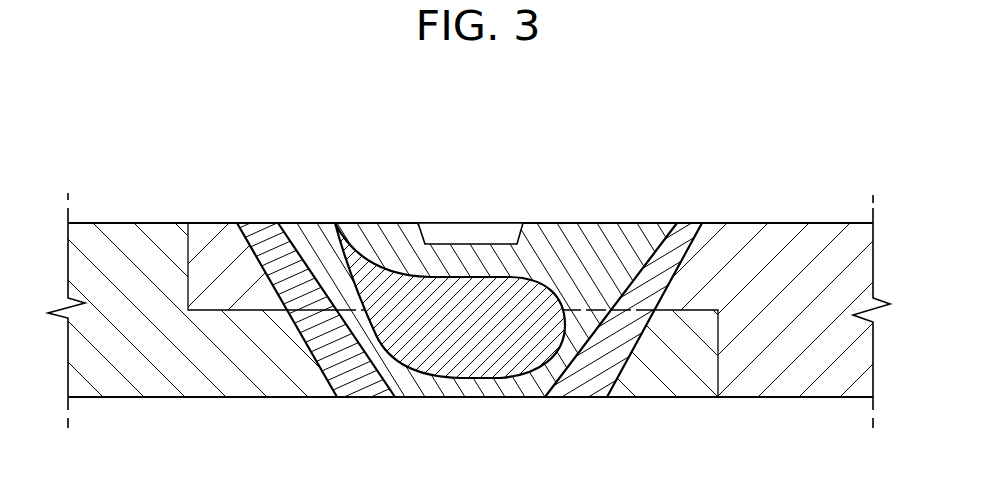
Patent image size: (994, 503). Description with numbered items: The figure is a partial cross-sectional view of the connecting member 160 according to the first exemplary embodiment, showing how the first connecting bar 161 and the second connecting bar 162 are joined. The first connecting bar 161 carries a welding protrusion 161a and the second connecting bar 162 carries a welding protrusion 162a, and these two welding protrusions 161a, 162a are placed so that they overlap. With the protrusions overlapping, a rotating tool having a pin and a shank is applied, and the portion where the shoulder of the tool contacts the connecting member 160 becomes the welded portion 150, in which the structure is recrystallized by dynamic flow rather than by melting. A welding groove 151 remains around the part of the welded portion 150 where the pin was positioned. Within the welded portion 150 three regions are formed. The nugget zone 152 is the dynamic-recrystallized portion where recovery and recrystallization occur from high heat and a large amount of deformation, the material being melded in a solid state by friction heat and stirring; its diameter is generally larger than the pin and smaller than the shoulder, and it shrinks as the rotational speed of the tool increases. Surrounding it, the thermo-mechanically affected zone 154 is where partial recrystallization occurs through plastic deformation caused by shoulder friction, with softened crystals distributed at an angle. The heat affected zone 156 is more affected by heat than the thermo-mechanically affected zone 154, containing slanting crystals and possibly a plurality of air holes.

The welded portion 150 is at (648, 225).
The welding groove 151 is at (463, 242).
The nugget zone 152 is at (527, 292).
The thermo-mechanically affected zone 154 is at (608, 243).
The heat affected zone 156 is at (268, 250).
The connecting member 160 is at (799, 210).
The first connecting bar 161 is at (117, 380).
The welding protrusion 161a is at (657, 383).
The second connecting bar 162 is at (792, 380).
The welding protrusion 162a is at (213, 248).